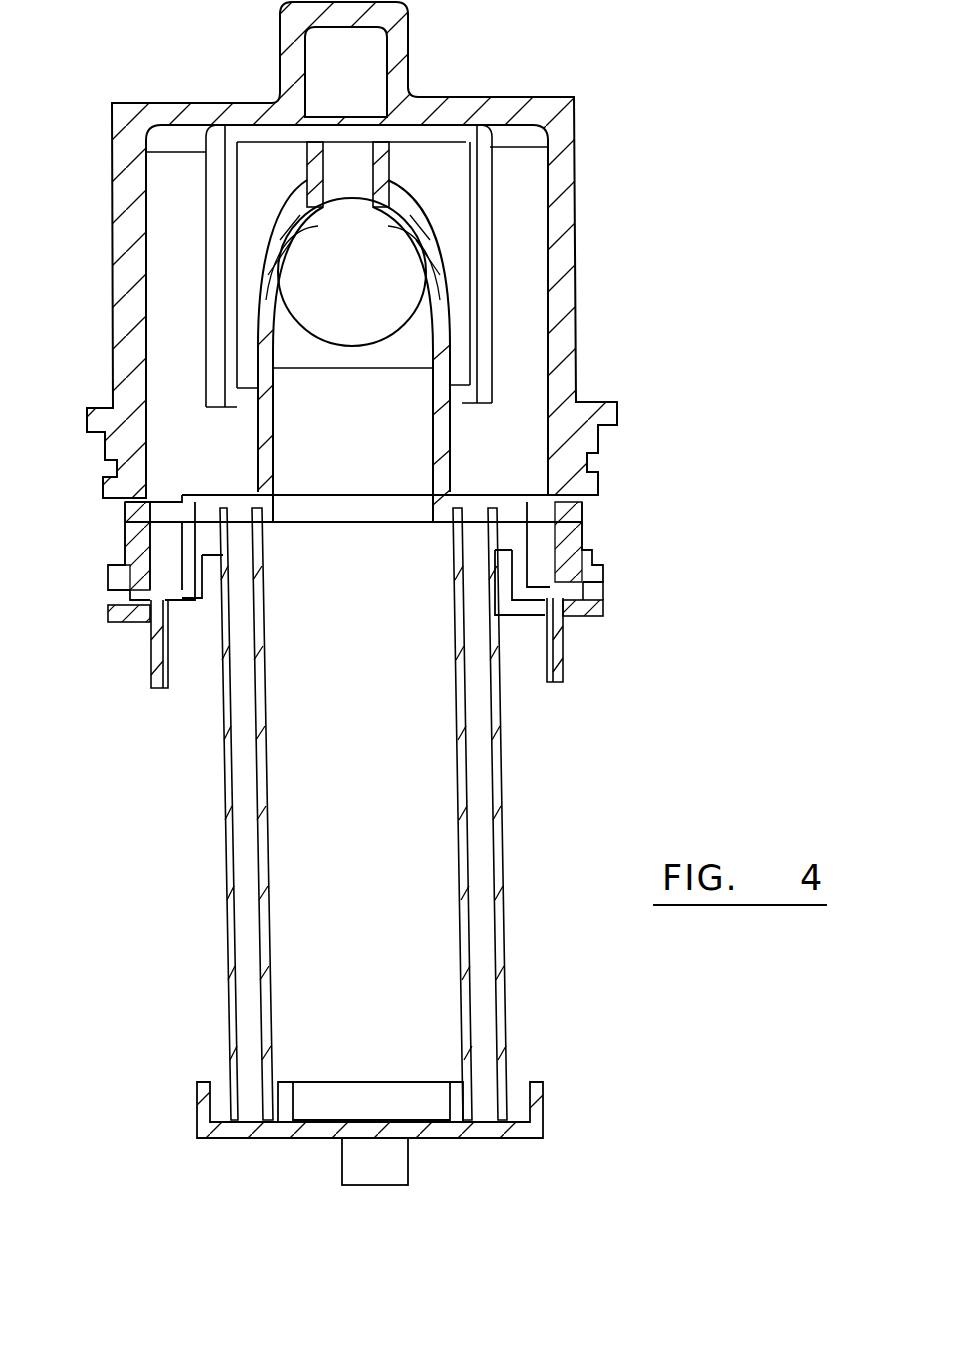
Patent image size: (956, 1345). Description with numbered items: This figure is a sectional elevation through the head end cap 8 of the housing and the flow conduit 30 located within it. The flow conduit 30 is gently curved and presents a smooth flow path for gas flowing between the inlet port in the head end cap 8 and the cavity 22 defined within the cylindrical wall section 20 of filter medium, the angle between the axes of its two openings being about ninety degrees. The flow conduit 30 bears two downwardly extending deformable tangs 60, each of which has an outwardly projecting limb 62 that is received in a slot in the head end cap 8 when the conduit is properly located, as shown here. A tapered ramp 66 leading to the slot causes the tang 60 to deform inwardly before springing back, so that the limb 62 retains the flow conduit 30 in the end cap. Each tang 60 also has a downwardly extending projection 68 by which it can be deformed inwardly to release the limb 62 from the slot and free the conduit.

The head end cap 8 is at (565, 193).
The flow conduit 30 is at (437, 325).
The tang 60 is at (150, 650).
The limb 62 is at (577, 593).
The tapered ramp 66 is at (578, 617).
The projection 68 is at (556, 684).
The cavity 22 is at (325, 885).
The wall section 20 is at (482, 955).